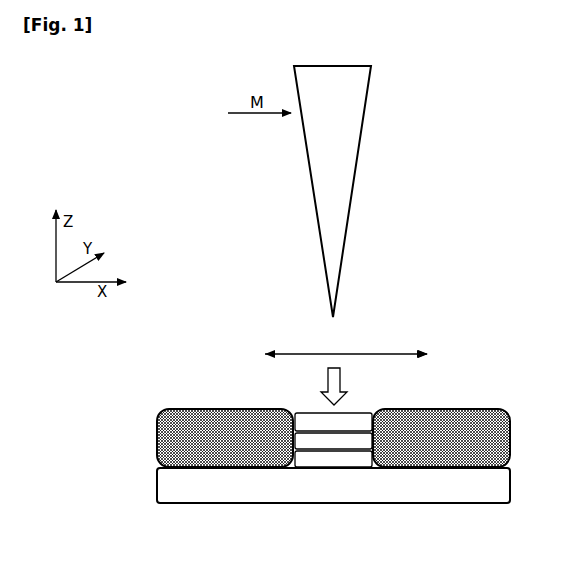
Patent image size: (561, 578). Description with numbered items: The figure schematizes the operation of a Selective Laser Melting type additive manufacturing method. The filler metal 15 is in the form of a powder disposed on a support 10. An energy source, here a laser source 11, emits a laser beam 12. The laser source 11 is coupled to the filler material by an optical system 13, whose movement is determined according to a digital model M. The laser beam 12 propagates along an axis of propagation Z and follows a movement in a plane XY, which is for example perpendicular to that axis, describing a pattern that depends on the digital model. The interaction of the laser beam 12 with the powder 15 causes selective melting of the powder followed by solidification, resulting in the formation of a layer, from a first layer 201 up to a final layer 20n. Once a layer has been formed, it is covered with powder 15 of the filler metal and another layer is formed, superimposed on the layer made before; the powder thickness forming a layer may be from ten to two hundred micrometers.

The support 10 is at (448, 473).
The laser source 11 is at (338, 178).
The laser beam 12 is at (326, 389).
The optical system 13 is at (370, 349).
The filler metal 15 is at (181, 421).
The layer 20n is at (354, 419).
The layer 201 is at (352, 468).